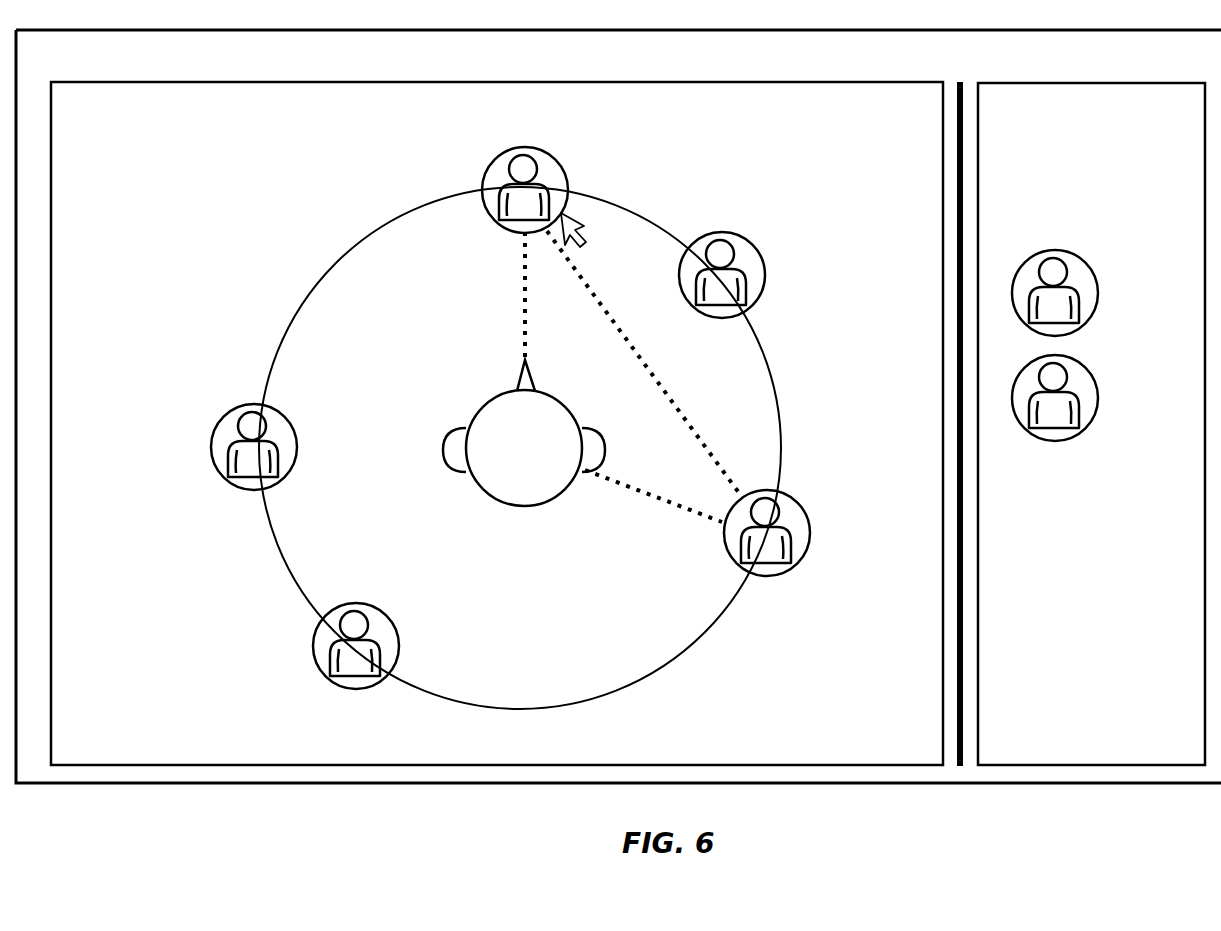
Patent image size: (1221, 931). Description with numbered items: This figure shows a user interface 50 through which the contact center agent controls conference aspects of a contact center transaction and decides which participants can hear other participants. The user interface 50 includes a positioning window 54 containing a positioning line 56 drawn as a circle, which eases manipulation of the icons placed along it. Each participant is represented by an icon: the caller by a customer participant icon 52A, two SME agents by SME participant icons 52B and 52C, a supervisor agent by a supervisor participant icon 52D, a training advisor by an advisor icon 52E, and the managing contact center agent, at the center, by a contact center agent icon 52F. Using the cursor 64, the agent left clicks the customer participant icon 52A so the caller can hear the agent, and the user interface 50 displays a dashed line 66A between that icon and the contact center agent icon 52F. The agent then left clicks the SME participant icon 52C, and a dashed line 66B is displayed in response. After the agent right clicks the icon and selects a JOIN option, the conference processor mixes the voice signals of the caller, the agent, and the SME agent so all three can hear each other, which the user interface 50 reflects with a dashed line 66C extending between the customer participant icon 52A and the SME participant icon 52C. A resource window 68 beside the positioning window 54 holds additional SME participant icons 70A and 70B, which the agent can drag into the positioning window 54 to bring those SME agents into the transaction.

The user interface 50 is at (1206, 69).
The positioning window 54 is at (110, 122).
The positioning line 56 is at (313, 288).
The customer participant icon 52A is at (566, 171).
The SME participant icon 52B is at (752, 303).
The SME participant icon 52C is at (806, 517).
The supervisor participant icon 52D is at (290, 476).
The advisor icon 52E is at (314, 630).
The contact center agent icon 52F is at (575, 492).
The cursor 64 is at (584, 240).
The dashed line 66A is at (522, 317).
The dashed line 66B is at (700, 410).
The dashed line 66C is at (677, 505).
The resource window 68 is at (1104, 150).
The SME participant icon 70A is at (1083, 256).
The SME participant icon 70B is at (1080, 434).